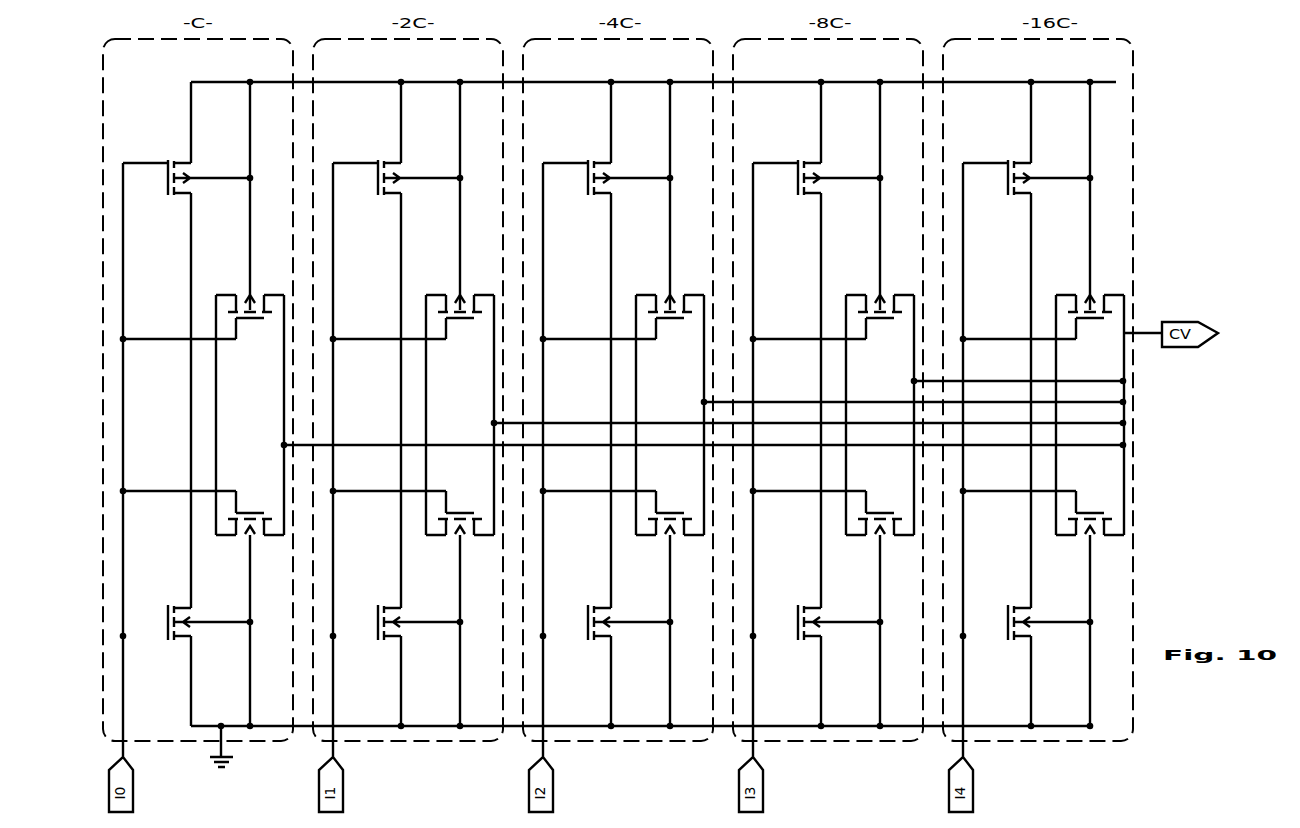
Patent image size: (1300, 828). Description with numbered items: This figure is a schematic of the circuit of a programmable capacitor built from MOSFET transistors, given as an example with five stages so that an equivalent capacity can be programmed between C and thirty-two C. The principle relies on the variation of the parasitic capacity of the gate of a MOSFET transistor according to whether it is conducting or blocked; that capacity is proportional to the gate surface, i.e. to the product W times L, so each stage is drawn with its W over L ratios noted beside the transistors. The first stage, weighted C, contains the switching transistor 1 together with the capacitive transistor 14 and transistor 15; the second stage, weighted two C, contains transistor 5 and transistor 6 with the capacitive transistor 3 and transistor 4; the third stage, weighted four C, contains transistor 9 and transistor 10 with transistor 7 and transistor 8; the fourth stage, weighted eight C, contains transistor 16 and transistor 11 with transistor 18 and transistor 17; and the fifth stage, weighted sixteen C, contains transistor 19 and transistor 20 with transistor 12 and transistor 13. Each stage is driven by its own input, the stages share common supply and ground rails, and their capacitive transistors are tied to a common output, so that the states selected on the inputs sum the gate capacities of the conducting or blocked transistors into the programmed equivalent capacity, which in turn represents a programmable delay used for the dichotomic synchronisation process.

The transistor Q1 1 is at (191, 400).
The transistor Q14 14 is at (252, 329).
The transistor Q15 15 is at (252, 498).
The transistor Q5 5 is at (401, 195).
The transistor Q6 6 is at (401, 613).
The transistor Q3 3 is at (462, 329).
The transistor Q4 4 is at (462, 498).
The transistor Q9 9 is at (611, 195).
The transistor Q10 10 is at (611, 613).
The transistor Q7 7 is at (672, 329).
The transistor Q8 8 is at (672, 498).
The transistor Q16 16 is at (821, 195).
The transistor Q11 11 is at (821, 613).
The transistor Q18 18 is at (882, 329).
The transistor Q17 17 is at (882, 498).
The transistor Q19 19 is at (1031, 195).
The transistor Q20 20 is at (1031, 613).
The transistor Q12 12 is at (1092, 329).
The transistor Q13 13 is at (1092, 498).